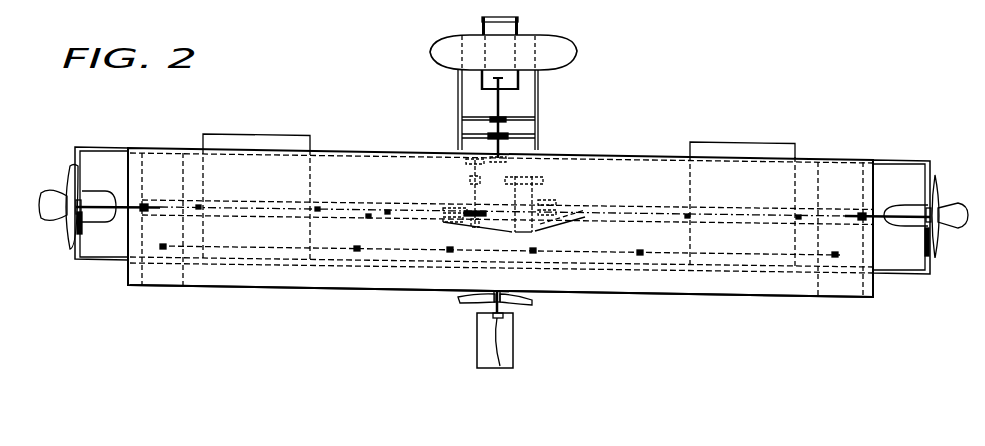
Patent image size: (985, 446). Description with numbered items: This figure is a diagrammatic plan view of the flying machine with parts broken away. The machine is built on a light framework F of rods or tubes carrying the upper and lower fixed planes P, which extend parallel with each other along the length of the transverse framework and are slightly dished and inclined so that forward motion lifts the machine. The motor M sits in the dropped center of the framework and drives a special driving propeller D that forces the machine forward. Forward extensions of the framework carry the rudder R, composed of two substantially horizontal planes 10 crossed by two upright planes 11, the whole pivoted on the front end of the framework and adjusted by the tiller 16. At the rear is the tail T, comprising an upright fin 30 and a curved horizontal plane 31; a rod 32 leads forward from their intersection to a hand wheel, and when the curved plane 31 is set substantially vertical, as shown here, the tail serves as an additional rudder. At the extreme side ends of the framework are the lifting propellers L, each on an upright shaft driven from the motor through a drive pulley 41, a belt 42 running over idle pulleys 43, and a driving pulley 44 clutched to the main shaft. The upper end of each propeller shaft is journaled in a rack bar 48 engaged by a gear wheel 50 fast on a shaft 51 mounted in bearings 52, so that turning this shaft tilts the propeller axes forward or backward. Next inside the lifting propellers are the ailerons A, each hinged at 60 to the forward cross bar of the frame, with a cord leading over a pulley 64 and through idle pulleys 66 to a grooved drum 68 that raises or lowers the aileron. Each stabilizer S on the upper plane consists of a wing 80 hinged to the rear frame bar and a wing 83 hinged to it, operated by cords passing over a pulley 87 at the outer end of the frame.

The horizontal plane 10 is at (560, 53).
The upright plane 11 is at (482, 21).
The tiller 16 is at (498, 105).
The upright fin 30 is at (488, 366).
The horizontal plane 31 is at (500, 360).
The rod 32 is at (505, 306).
The drive pulley 41 is at (62, 218).
The belt 42 is at (125, 218).
The idle pulleys 43 is at (556, 203).
The driving pulley 44 is at (470, 206).
The rack bar 48 is at (76, 232).
The gear wheel 50 is at (78, 200).
The shaft 51 is at (150, 204).
The bearings 52 is at (135, 209).
The hinge 60 is at (175, 147).
The pulley 64 is at (158, 250).
The idle pulleys 66 is at (357, 251).
The drum 68 is at (545, 168).
The wing 80 is at (296, 238).
The wing 83 is at (300, 187).
The pulley 87 is at (205, 205).
The aileron A is at (842, 288).
The driving propeller D is at (462, 305).
The framework F is at (540, 104).
The lifting propeller L is at (61, 206).
The motor M is at (476, 170).
The fixed plane P is at (748, 166).
The rudder R is at (455, 52).
The stabilizer S is at (262, 143).
The tail T is at (482, 356).